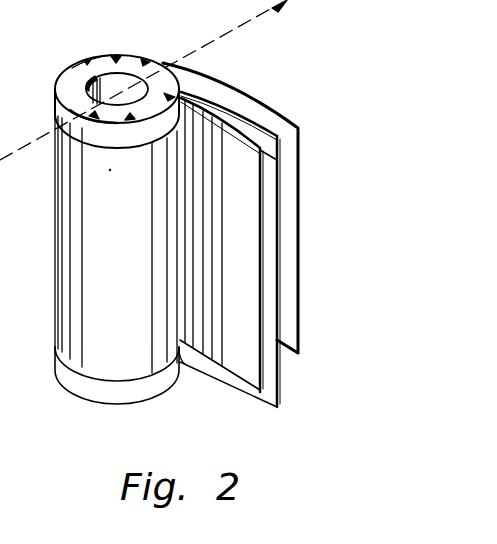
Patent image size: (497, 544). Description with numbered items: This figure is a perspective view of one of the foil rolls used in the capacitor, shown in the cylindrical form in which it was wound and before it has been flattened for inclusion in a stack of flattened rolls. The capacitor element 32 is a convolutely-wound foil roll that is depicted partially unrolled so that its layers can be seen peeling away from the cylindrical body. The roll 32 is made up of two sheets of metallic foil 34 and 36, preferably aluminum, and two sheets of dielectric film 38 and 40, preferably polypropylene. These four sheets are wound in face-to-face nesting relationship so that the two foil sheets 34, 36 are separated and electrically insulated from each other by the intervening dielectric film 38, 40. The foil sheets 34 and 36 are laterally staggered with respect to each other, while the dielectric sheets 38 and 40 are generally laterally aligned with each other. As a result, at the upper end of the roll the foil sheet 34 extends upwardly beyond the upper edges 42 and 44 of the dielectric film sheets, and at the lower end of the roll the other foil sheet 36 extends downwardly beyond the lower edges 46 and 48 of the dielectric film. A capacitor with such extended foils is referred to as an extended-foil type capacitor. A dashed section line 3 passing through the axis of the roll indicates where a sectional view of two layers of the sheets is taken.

The section line 3- 3 is at (285, 4).
The capacitor element 32 is at (55, 262).
The sheet of metallic foil 34 is at (300, 199).
The sheet of metallic foil 36 is at (275, 238).
The sheet of dielectric film 38 is at (275, 154).
The sheet of dielectric film 40 is at (250, 297).
The upper edge of dielectric film 42 is at (245, 118).
The upper edge of dielectric film 44 is at (233, 124).
The lower edge of dielectric film 46 is at (278, 366).
The lower edge of dielectric film 48 is at (240, 375).